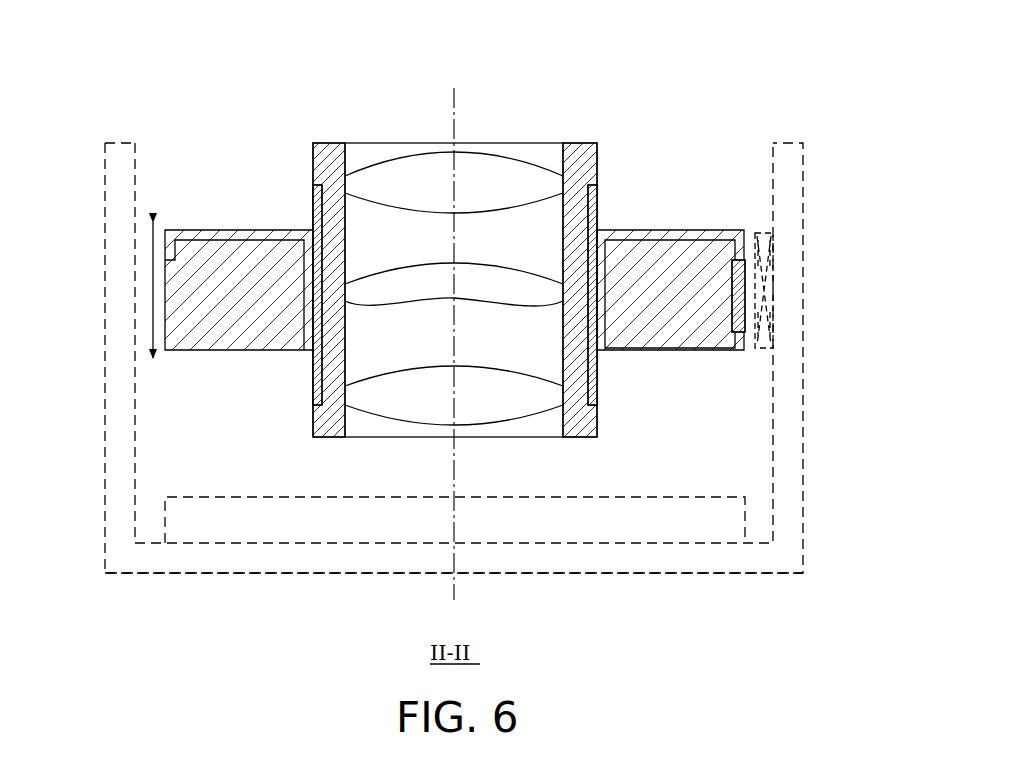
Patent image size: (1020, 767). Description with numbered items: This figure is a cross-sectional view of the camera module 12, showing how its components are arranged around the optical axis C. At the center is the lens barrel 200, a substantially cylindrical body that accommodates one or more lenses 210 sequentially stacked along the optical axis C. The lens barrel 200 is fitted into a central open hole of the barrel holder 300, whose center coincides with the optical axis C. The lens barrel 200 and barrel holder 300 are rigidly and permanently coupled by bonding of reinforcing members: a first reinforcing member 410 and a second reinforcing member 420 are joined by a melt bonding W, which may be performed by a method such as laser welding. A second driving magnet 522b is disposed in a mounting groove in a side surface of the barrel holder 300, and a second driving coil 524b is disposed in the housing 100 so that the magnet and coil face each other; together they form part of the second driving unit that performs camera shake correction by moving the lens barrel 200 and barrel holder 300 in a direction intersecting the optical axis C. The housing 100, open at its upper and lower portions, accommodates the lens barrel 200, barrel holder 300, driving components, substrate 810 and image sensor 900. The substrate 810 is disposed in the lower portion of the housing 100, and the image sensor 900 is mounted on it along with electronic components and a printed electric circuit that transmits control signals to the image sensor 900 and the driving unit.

The camera module 12 is at (738, 128).
The housing 100 is at (105, 376).
The lens barrel 200 is at (578, 143).
The lens 210 is at (513, 165).
The barrel holder 300 is at (222, 240).
The first reinforcing member 410 is at (597, 172).
The second reinforcing member 420 is at (662, 238).
The second driving magnet 522b is at (738, 297).
The second driving coil 524b is at (770, 288).
The substrate 810 is at (620, 560).
The image sensor 900 is at (541, 533).
The melt bonding W is at (310, 229).
The optical axis C is at (454, 112).